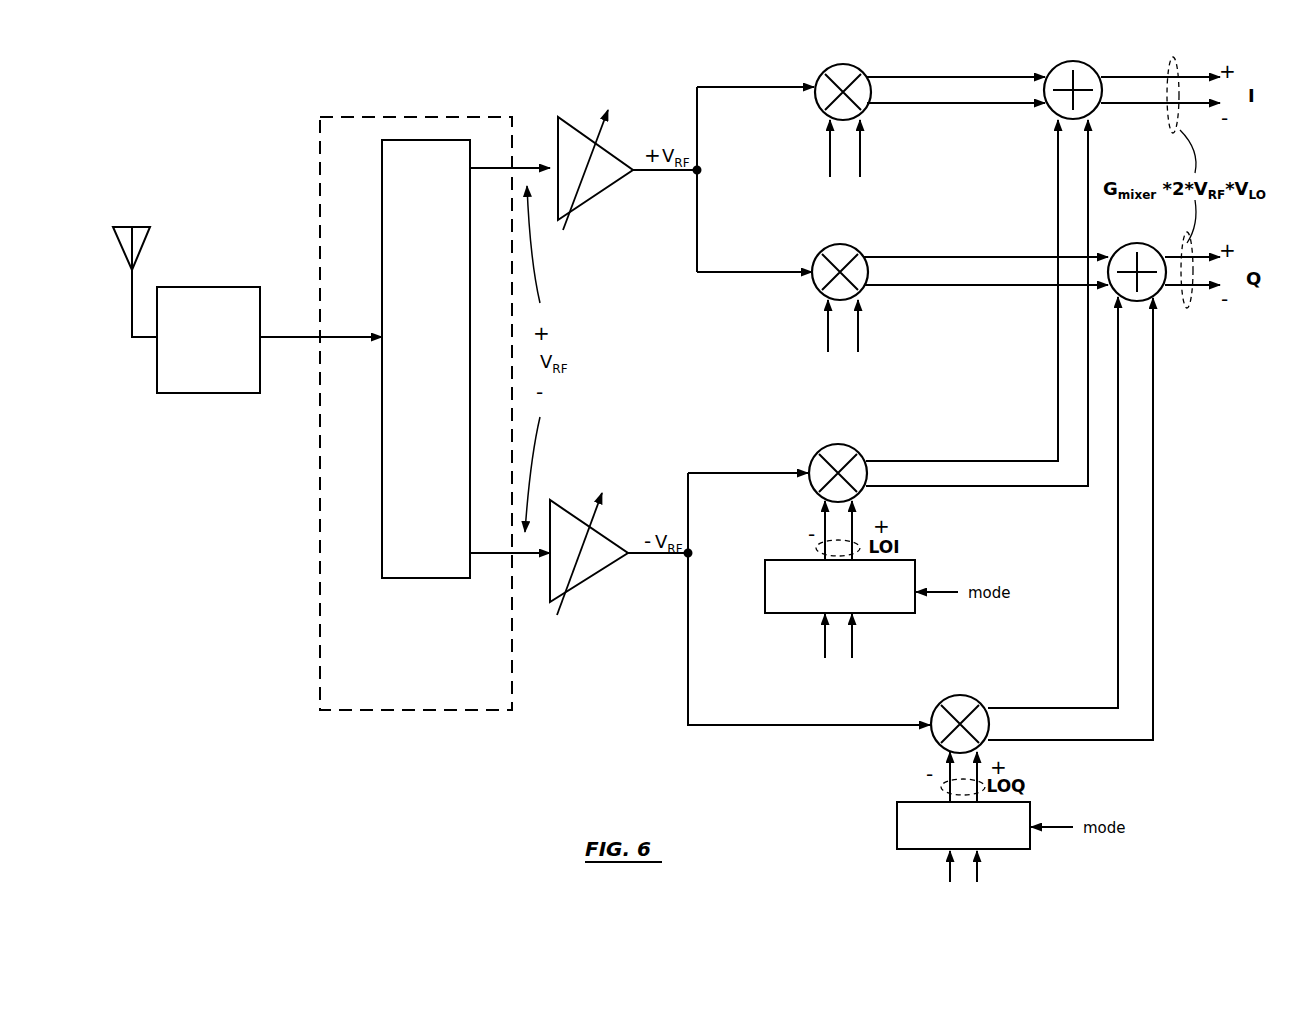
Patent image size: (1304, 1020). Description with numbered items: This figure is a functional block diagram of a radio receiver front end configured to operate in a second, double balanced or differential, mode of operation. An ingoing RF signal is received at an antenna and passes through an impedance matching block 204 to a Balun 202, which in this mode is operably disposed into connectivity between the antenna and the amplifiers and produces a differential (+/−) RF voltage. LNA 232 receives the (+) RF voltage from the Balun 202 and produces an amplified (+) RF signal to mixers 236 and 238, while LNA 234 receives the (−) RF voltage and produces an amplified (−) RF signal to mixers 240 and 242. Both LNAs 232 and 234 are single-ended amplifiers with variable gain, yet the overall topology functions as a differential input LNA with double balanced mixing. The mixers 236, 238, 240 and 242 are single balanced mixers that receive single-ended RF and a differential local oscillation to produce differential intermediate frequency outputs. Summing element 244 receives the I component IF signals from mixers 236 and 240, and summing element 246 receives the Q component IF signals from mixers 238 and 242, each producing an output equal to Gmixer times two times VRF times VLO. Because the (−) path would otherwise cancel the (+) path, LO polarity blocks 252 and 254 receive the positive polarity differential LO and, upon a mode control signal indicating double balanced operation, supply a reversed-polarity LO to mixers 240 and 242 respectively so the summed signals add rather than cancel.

The Balun 202 is at (442, 118).
The impedance matching block 204 is at (184, 288).
The low noise amplifier 232 is at (605, 148).
The low noise amplifier 234 is at (605, 535).
The mixer 236 is at (858, 66).
The mixer 238 is at (856, 246).
The mixer 240 is at (843, 446).
The mixer 242 is at (967, 697).
The summing element 244 is at (1080, 64).
The summing element 246 is at (1140, 243).
The LO polarity block 252 is at (902, 562).
The LO polarity block 254 is at (1020, 803).